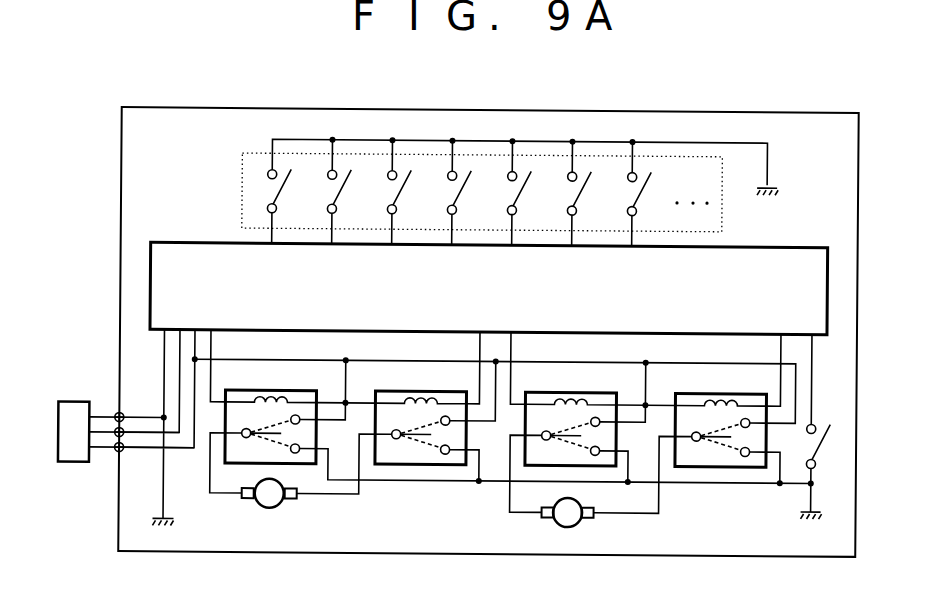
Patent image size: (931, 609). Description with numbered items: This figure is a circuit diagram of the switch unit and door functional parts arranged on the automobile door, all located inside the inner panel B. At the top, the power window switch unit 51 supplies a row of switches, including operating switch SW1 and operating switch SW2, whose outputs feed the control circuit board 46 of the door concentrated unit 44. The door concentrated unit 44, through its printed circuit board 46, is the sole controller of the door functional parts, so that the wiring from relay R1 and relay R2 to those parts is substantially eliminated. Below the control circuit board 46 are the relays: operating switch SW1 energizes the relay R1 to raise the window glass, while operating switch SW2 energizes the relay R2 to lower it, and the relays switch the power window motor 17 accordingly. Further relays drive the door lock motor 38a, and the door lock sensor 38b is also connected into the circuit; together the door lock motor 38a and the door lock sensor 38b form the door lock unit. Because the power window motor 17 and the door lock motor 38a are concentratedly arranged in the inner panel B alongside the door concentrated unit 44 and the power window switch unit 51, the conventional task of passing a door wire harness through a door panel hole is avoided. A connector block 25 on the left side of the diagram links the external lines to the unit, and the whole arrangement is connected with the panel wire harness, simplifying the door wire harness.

The inner panel B is at (752, 110).
The power window switch unit 51 is at (601, 125).
The door concentrated unit 44 is at (503, 199).
The control circuit board 46 is at (489, 288).
The operating switch SW1 is at (268, 199).
The operating switch SW2 is at (327, 194).
The relay R1 is at (272, 392).
The relay R2 is at (382, 392).
The power window motor 17 is at (271, 510).
The door lock motor 38a is at (567, 527).
The door lock sensor 38b is at (810, 543).
The connector 25 is at (73, 404).